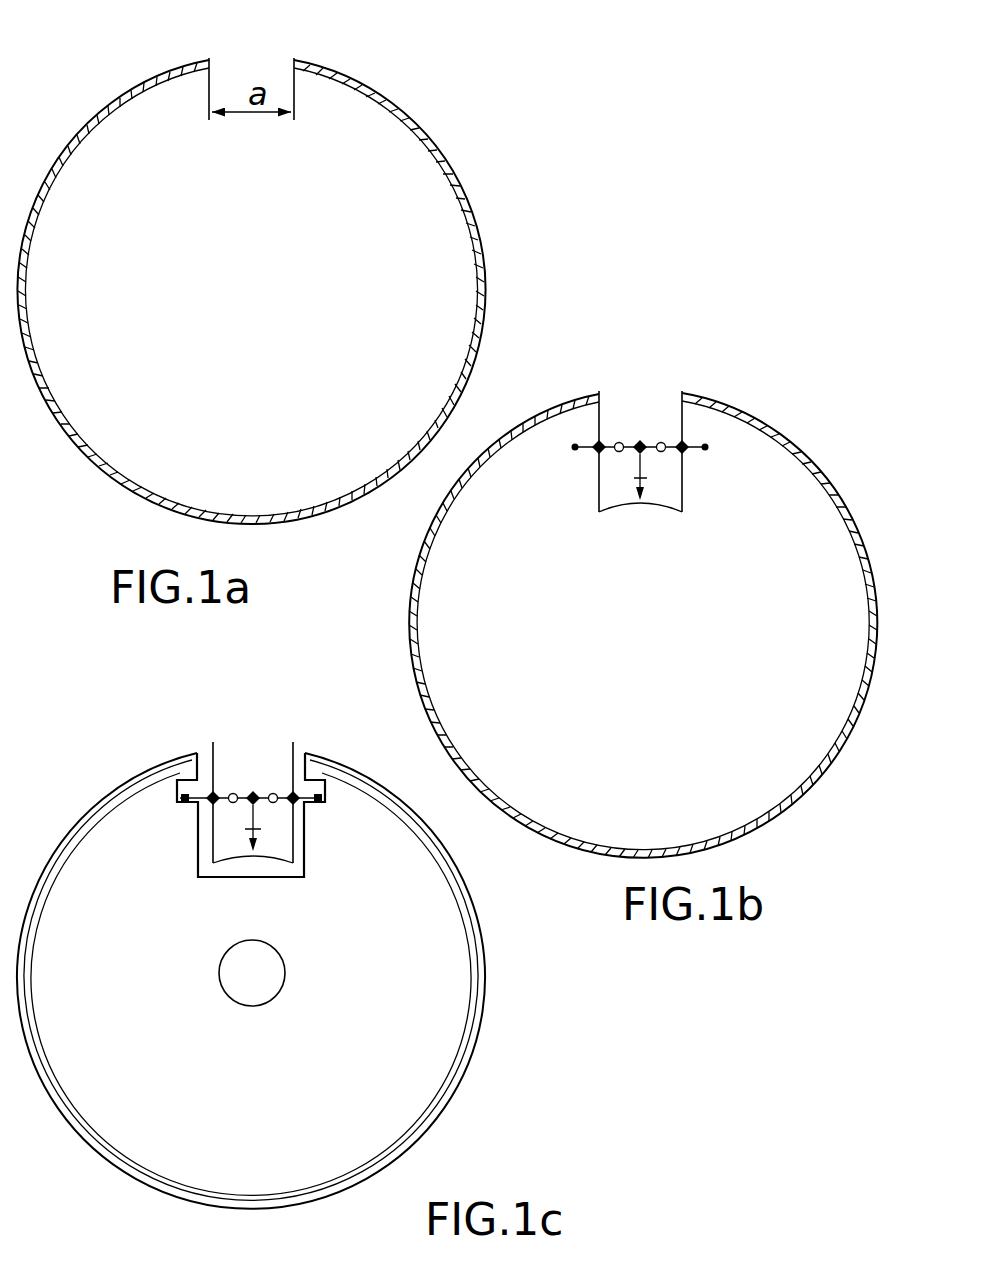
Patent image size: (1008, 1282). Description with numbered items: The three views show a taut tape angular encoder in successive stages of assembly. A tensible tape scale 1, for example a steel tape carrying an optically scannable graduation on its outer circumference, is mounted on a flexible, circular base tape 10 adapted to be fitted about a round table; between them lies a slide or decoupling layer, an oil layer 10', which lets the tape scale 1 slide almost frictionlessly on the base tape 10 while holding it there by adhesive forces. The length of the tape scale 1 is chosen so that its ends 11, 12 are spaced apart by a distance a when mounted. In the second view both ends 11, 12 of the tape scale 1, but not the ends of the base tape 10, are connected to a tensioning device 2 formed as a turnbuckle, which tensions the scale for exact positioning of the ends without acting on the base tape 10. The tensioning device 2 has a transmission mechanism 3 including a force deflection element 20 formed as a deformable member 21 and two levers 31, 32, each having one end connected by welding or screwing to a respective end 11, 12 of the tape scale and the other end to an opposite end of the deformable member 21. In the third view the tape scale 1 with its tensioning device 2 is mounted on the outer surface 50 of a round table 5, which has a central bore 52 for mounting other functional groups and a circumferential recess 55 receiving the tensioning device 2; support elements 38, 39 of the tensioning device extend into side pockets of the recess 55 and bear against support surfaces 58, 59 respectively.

In FIG. 1a, the tape scale 1 is at (291, 292).
In FIG. 1b, the tape scale 1 is at (621, 625).
In FIG. 1c, the tape scale 1 is at (309, 981).
In FIG. 1a, the base tape 10 is at (291, 292).
In FIG. 1b, the base tape 10 is at (643, 625).
In FIG. 1c, the base tape 10 is at (309, 981).
In FIG. 1b, the oil layer 10' is at (628, 808).
In FIG. 1a, the end of the tape scale 11 is at (208, 58).
In FIG. 1b, the end of the tape scale 11 is at (600, 391).
In FIG. 1c, the end of the tape scale 11 is at (214, 742).
In FIG. 1a, the end of the tape scale 12 is at (296, 58).
In FIG. 1b, the end of the tape scale 12 is at (683, 391).
In FIG. 1c, the end of the tape scale 12 is at (293, 742).
In FIG. 1b, the tensioning device 2 is at (655, 418).
In FIG. 1b, the transmission mechanism 3 is at (644, 453).
In FIG. 1b, the force deflection element 20 is at (621, 511).
In FIG. 1b, the deformable member 21 is at (656, 509).
In FIG. 1b, the lever 31 is at (600, 475).
In FIG. 1b, the lever 32 is at (683, 487).
In FIG. 1c, the round table 5 is at (247, 900).
In FIG. 1c, the outer surface 50 is at (452, 1060).
In FIG. 1c, the central bore 52 is at (285, 983).
In FIG. 1c, the recess 55 is at (262, 877).
In FIG. 1c, the support element 38 is at (179, 800).
In FIG. 1c, the support element 39 is at (326, 797).
In FIG. 1c, the support surface 58 is at (197, 806).
In FIG. 1c, the support surface 59 is at (308, 806).